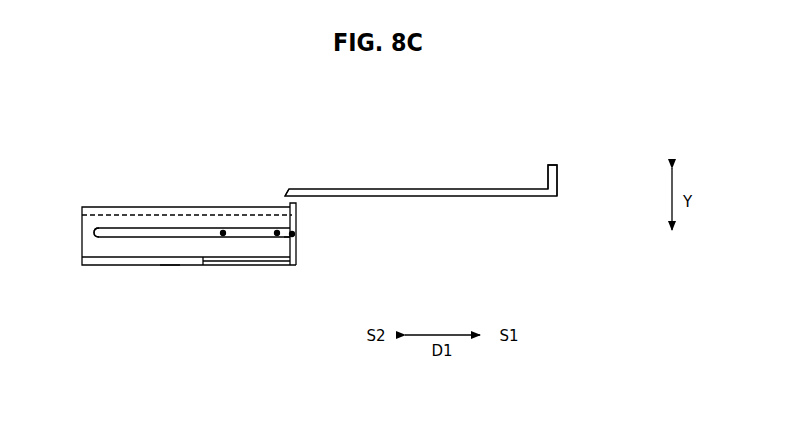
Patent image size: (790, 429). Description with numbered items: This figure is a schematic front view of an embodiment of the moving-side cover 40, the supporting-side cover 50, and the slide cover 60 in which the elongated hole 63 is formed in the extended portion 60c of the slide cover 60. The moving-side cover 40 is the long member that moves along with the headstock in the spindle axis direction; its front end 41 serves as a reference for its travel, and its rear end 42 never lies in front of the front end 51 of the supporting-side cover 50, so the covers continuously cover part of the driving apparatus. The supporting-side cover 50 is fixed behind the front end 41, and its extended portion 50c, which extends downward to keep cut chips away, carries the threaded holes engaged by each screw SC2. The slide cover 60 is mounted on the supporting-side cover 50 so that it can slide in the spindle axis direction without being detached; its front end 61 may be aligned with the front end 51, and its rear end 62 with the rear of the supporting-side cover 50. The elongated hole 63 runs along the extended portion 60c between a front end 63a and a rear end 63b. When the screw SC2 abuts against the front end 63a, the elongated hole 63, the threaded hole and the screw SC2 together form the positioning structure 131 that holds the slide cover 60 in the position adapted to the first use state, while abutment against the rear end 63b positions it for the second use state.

The moving-side cover 40 is at (486, 197).
The front end 41 is at (557, 187).
The rear end 42 is at (287, 192).
The supporting-side cover 50 is at (148, 268).
The extended portion 50c is at (170, 266).
The front end 51 is at (302, 215).
The slide cover 60 is at (120, 207).
The extended portion 60c is at (203, 263).
The front end 61 is at (297, 258).
The rear end 62 is at (82, 218).
The elongated hole 63 is at (168, 228).
The front end 63a is at (281, 258).
The rear end 63b is at (93, 233).
The screw SC2 is at (277, 233).
The positioning structure 131 is at (294, 235).